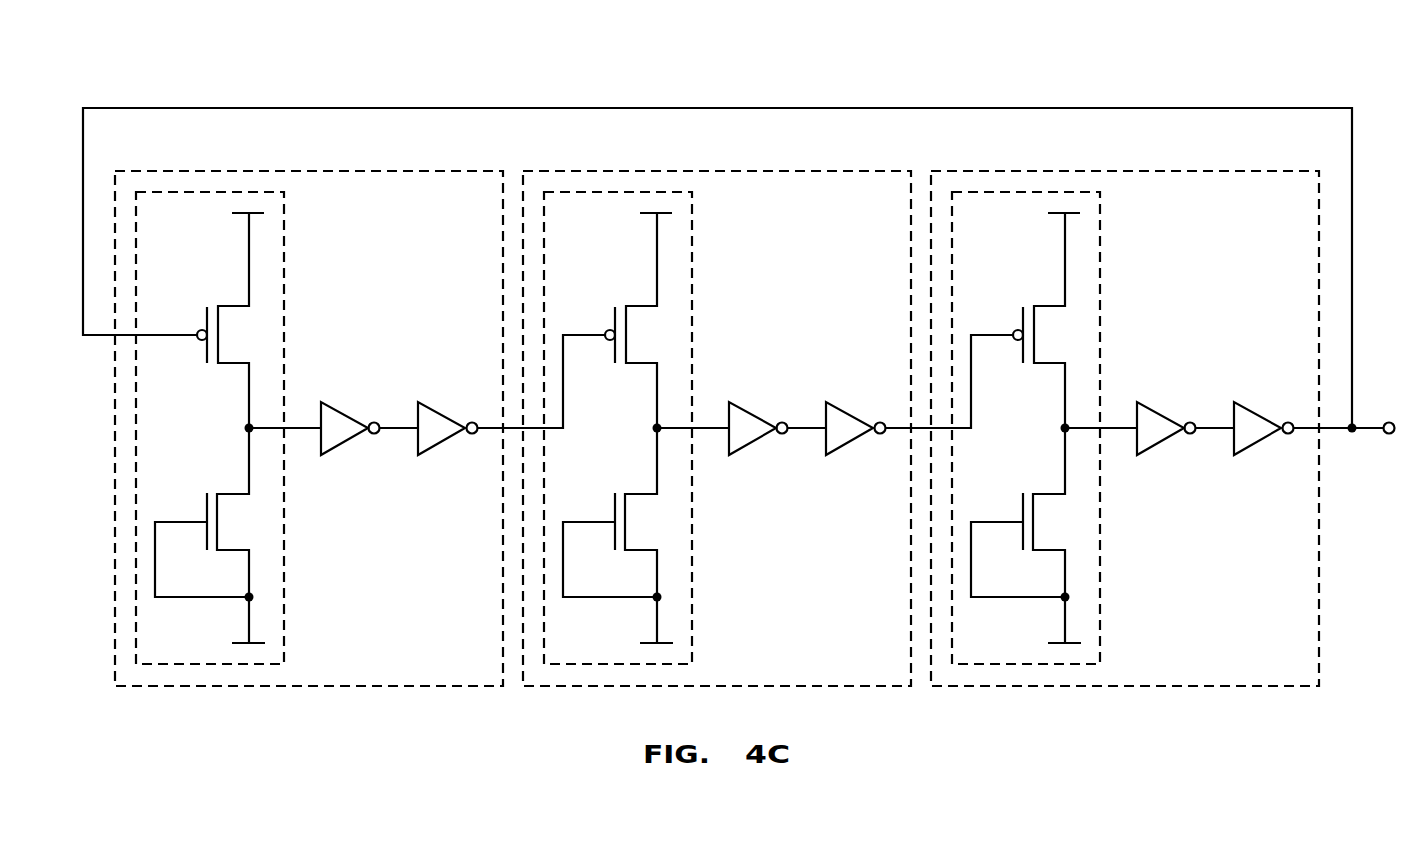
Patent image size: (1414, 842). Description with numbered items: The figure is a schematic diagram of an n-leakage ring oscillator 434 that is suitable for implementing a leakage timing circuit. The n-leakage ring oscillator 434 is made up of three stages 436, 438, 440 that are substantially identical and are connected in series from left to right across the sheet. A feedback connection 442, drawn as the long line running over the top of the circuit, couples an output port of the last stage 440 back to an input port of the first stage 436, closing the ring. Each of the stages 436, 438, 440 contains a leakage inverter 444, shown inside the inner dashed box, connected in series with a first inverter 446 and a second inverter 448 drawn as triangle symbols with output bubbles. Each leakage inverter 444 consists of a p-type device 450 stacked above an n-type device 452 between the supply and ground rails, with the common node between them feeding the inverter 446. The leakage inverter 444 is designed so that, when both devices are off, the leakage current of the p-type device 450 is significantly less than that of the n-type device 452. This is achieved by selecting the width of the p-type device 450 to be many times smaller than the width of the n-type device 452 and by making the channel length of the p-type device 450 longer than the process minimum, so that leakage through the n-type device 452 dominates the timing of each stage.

The n-leakage ring oscillator 434 is at (1218, 67).
The stage 436 is at (318, 168).
The stage 438 is at (726, 168).
The stage 440 is at (1134, 168).
The feedback connection 442 is at (507, 108).
The leakage inverter 444 is at (285, 249).
The inverter 446 is at (345, 413).
The inverter 448 is at (442, 413).
The p-type device 450 is at (235, 306).
The n-type device 452 is at (235, 494).